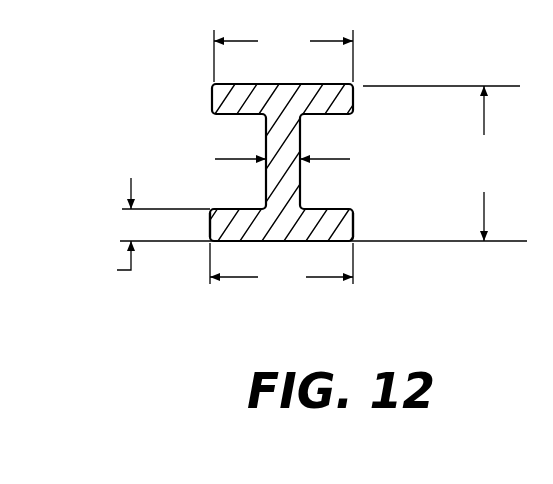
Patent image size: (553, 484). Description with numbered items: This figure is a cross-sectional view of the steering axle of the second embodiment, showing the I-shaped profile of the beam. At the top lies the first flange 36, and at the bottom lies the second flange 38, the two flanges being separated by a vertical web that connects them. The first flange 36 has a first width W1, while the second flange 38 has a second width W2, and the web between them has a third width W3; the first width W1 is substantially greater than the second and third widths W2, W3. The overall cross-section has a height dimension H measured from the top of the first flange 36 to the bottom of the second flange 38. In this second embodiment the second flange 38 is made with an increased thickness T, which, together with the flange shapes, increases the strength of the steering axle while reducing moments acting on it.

The first flange 36 is at (344, 104).
The second flange 38 is at (228, 226).
The first width W1 is at (283, 51).
The second width W2 is at (281, 276).
The third width W3 is at (305, 180).
The height dimension H is at (323, 163).
The thickness T is at (146, 224).